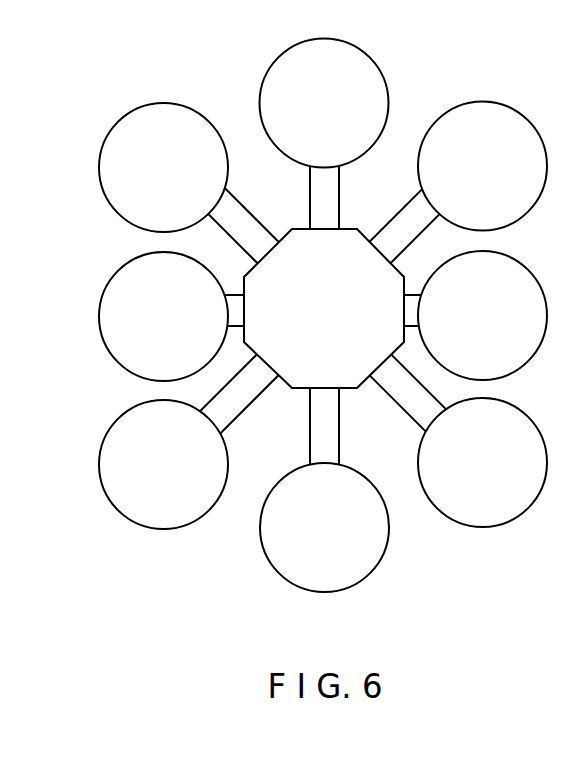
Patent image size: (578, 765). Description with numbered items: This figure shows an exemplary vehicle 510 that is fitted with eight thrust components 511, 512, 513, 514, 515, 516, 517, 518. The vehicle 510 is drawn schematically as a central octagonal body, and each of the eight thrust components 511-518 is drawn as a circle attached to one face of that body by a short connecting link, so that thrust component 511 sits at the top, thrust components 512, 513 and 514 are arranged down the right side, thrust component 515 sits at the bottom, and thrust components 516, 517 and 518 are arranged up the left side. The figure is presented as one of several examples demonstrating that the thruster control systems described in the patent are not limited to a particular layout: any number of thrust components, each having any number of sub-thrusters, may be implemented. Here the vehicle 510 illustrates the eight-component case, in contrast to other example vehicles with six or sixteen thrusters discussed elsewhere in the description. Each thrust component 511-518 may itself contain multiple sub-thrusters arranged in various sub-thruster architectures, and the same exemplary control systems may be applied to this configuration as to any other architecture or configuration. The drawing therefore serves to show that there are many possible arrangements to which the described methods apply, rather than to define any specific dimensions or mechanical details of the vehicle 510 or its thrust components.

The vehicle 510 is at (213, 82).
The thrust component 511 is at (324, 103).
The thrust component 512 is at (482, 166).
The thrust component 513 is at (482, 315).
The thrust component 514 is at (482, 462).
The thrust component 515 is at (324, 527).
The thrust component 516 is at (163, 464).
The thrust component 517 is at (163, 316).
The thrust component 518 is at (163, 167).